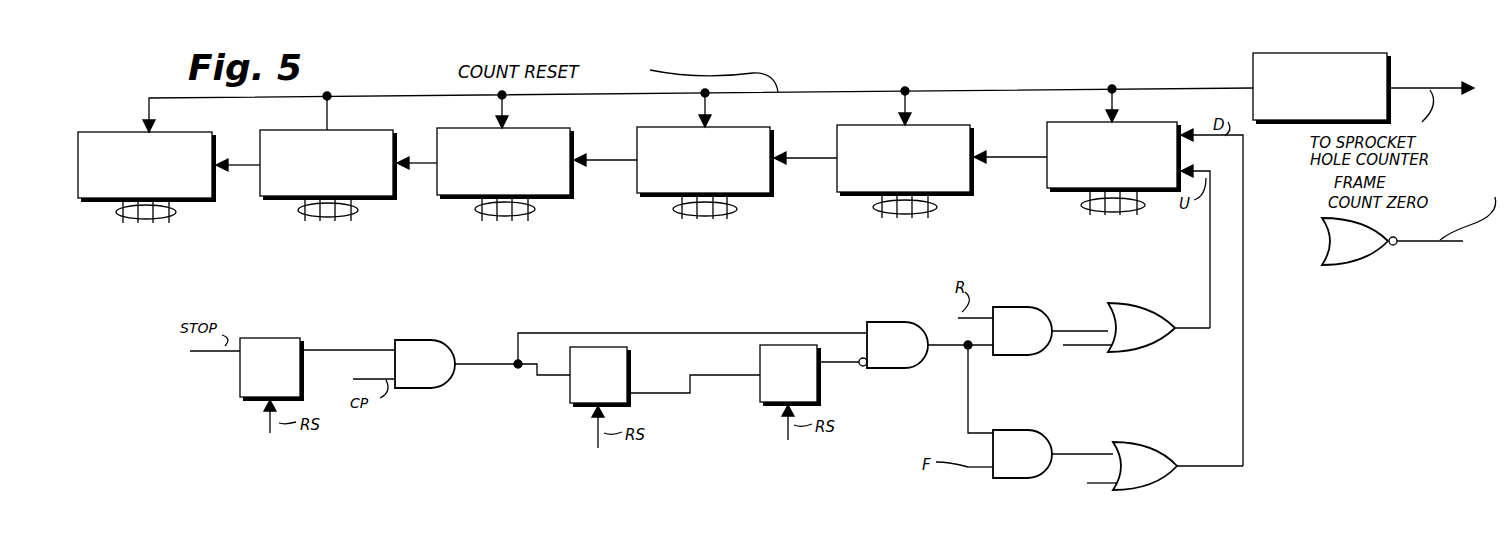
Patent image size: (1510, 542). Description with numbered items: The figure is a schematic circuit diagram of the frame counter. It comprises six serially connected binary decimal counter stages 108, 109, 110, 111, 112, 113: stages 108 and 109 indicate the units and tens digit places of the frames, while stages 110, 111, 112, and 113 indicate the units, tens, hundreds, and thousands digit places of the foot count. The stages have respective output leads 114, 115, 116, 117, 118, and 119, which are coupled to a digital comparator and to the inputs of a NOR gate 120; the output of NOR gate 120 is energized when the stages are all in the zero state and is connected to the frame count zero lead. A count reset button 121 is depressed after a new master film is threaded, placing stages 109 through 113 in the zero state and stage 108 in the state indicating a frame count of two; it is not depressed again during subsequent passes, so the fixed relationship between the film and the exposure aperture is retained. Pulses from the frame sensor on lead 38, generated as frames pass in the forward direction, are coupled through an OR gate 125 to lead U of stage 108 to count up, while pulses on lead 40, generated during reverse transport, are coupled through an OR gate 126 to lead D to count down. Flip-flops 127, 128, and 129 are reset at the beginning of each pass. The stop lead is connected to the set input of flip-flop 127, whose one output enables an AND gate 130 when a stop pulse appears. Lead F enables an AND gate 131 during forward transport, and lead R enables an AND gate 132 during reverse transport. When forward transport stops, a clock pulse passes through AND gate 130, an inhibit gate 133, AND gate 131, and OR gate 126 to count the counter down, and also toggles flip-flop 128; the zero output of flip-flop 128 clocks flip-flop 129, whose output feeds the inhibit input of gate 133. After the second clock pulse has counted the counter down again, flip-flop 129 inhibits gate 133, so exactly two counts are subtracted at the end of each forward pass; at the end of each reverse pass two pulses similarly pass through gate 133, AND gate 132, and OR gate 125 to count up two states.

The binary decimal counter stage 108 is at (1184, 108).
The binary decimal counter stage 109 is at (981, 112).
The binary decimal counter stage 110 is at (740, 127).
The binary decimal counter stage 111 is at (583, 115).
The binary decimal counter stage 112 is at (413, 118).
The binary decimal counter stage 113 is at (240, 121).
The output lead 114 is at (1142, 203).
The output lead 115 is at (934, 205).
The output lead 116 is at (734, 206).
The output lead 117 is at (532, 206).
The output lead 118 is at (355, 207).
The output lead 119 is at (173, 209).
The NOR gate 120 is at (1340, 266).
The count reset button 121 is at (1286, 122).
The OR gate 125 is at (1182, 276).
The OR gate 126 is at (1160, 442).
The flip-flop 127 is at (323, 310).
The flip-flop 128 is at (641, 312).
The flip-flop 129 is at (812, 312).
The AND gate 130 is at (425, 389).
The AND gate 131 is at (1097, 420).
The AND gate 132 is at (1057, 276).
The inhibit gate 133 is at (925, 288).
The lead 38 is at (1072, 346).
The lead 40 is at (1097, 485).